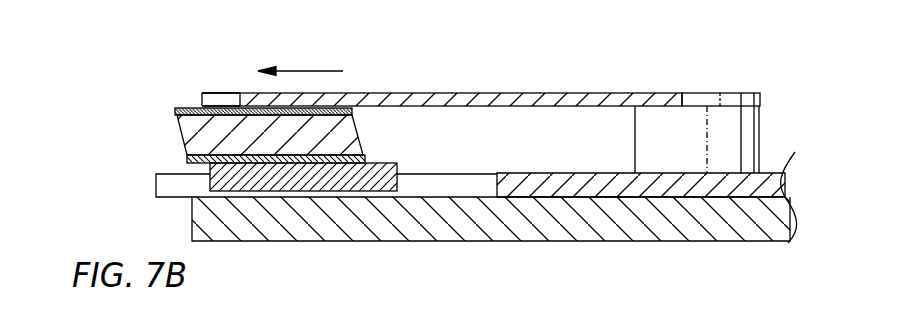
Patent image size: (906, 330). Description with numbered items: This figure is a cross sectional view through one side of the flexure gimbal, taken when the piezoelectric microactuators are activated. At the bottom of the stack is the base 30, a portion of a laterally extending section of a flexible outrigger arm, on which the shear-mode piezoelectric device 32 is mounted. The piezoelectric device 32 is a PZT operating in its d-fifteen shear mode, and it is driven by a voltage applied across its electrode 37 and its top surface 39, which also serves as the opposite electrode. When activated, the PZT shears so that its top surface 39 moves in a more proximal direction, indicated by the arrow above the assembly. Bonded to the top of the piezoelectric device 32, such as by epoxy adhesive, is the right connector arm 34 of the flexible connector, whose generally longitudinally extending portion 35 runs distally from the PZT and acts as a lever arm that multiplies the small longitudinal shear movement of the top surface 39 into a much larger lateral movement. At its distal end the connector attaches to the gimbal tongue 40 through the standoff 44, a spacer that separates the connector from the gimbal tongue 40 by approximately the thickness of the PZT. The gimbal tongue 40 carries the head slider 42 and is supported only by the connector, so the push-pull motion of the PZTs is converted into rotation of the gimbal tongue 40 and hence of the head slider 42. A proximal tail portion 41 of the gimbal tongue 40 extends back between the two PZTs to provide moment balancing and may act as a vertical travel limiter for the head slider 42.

The base 30 is at (392, 162).
The piezoelectric device 32 is at (167, 143).
The right connector arm 34 is at (230, 100).
The generally longitudinally extending portion 35 is at (502, 93).
The electrode 37 is at (183, 159).
The top surface 39 is at (178, 111).
The gimbal tongue 40 is at (607, 183).
The proximal tail portion 41 is at (157, 185).
The head slider 42 is at (438, 237).
The standoff 44 is at (743, 140).